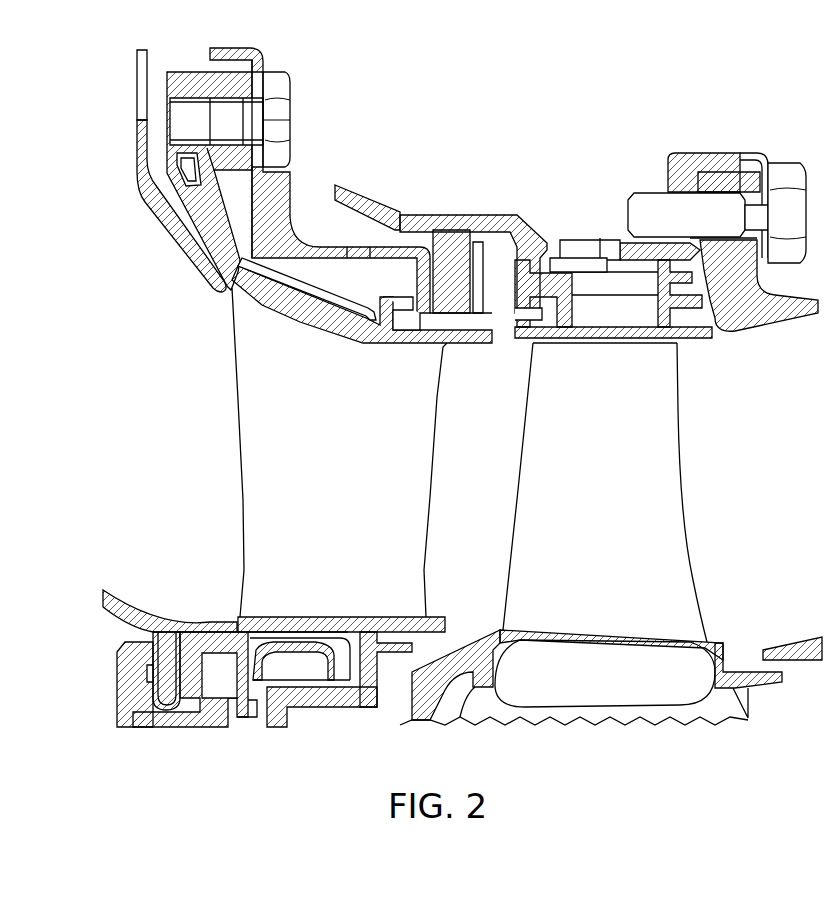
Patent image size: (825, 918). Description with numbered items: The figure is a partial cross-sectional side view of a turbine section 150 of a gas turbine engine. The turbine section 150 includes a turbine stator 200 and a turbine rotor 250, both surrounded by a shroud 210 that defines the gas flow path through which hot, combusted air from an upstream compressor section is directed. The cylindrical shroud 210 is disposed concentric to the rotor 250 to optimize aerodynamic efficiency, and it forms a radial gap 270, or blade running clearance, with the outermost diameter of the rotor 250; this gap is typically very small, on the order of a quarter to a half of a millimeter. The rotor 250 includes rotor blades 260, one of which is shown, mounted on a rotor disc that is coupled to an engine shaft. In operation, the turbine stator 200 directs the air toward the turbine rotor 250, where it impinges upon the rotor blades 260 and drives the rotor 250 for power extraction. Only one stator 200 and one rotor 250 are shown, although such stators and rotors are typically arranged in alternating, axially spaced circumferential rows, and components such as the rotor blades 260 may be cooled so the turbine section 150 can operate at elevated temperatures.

The turbine section 150 is at (388, 110).
The turbine stator 200 is at (243, 485).
The shroud 210 is at (600, 325).
The turbine rotor 250 is at (720, 567).
The rotor blade 260 is at (677, 421).
The radial gap 270 is at (531, 341).